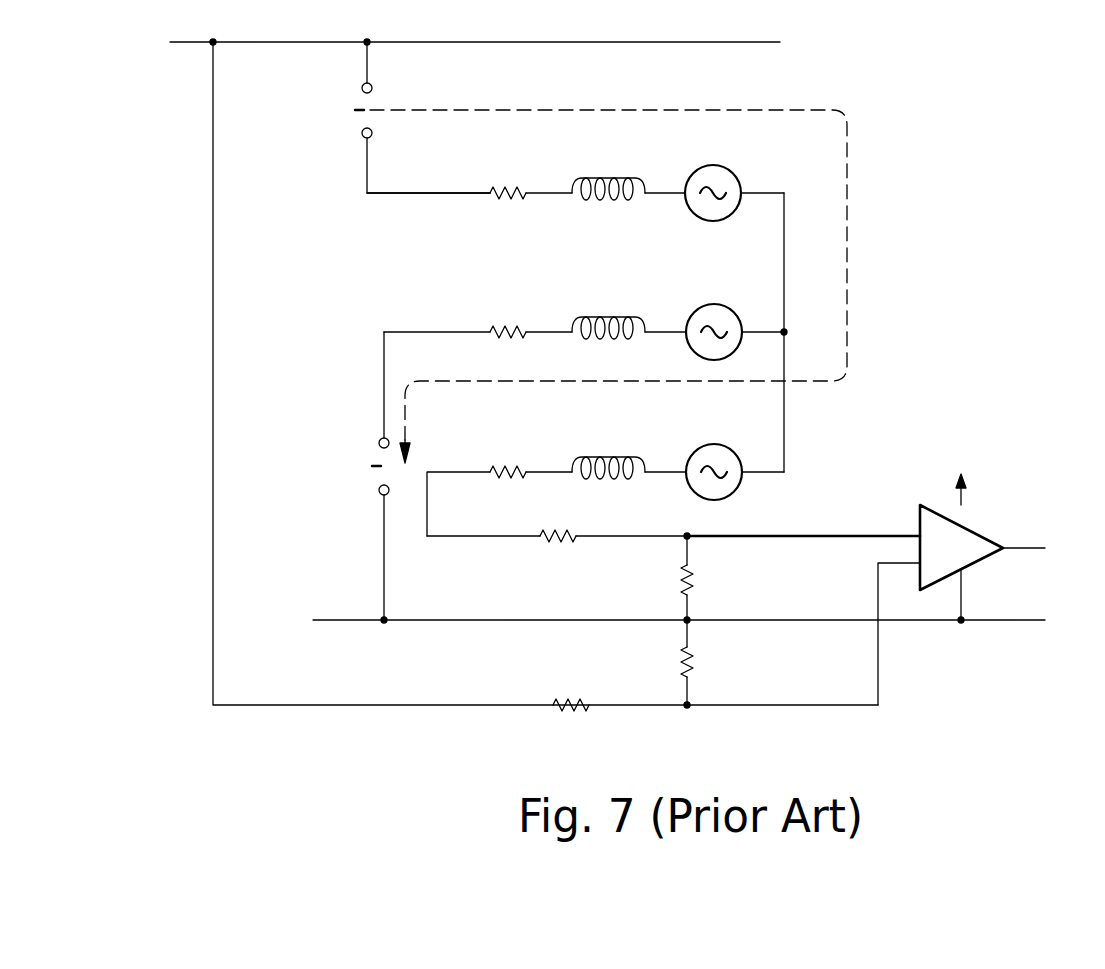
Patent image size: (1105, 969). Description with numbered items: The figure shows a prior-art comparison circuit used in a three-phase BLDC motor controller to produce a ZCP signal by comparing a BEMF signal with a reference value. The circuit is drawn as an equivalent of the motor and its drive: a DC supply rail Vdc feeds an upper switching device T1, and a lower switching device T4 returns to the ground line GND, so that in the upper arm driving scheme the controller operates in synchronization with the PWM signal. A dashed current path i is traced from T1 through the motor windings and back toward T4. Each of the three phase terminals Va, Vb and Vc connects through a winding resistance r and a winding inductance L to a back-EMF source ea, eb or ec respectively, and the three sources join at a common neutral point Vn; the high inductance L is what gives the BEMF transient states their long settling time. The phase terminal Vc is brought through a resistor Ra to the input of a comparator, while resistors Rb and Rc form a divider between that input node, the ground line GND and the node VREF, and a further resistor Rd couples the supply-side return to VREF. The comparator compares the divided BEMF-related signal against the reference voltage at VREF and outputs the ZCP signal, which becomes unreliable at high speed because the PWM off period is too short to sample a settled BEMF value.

The DC supply voltage rail Vdc is at (498, 365).
The upper switching transistor T1 is at (403, 117).
The lower switching transistor T4 is at (363, 476).
The phase current path i is at (608, 269).
The phase a terminal voltage Va is at (428, 174).
The phase b terminal voltage Vb is at (437, 313).
The phase c terminal voltage Vc is at (458, 485).
The winding resistance r is at (508, 317).
The winding inductance L is at (606, 312).
The phase a back EMF source ea is at (734, 173).
The phase b back EMF source eb is at (735, 313).
The phase c back EMF source ec is at (735, 453).
The neutral point voltage Vn is at (800, 332).
The resistor Ra is at (673, 520).
The resistor Rb is at (707, 579).
The resistor Rc is at (707, 664).
The resistor Rd is at (570, 681).
The ground line GND is at (649, 622).
The reference voltage node VREF is at (912, 645).